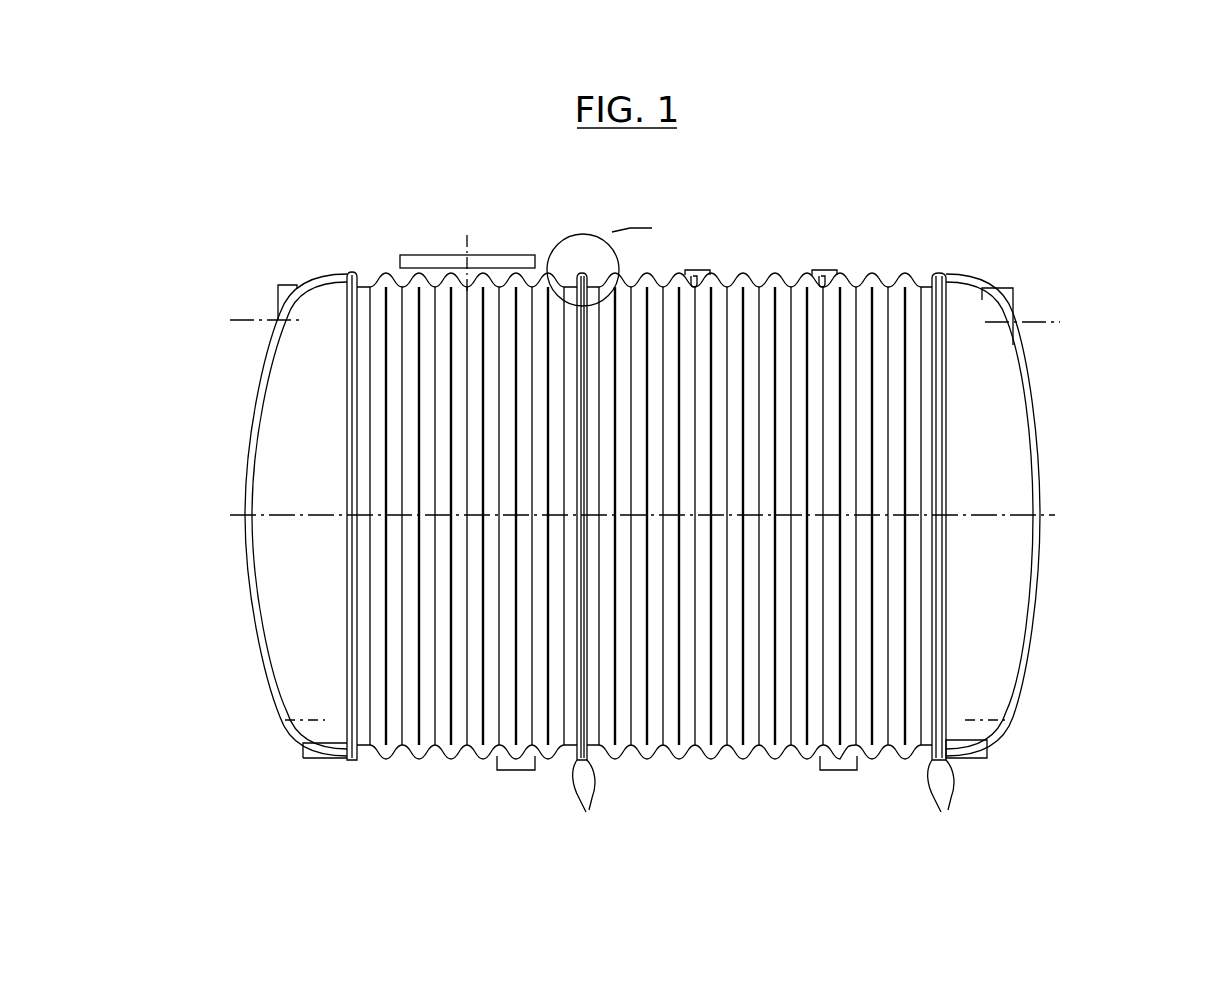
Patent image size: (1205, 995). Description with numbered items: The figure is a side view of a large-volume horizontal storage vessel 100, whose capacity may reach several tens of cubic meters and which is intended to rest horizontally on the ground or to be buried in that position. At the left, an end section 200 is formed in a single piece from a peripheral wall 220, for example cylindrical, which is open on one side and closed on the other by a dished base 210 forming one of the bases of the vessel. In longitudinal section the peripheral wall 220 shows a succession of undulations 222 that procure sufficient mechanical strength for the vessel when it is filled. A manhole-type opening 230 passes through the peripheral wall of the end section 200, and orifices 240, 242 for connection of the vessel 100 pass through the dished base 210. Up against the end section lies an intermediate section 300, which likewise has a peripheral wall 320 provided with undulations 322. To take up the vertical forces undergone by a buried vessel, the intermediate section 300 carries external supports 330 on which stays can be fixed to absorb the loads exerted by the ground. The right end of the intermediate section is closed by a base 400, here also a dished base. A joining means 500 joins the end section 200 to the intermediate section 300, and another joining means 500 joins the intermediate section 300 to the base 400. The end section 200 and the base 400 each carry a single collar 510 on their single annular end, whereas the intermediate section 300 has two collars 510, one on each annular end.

The vessel 100 is at (1005, 203).
The end section 200 is at (306, 575).
The dished base 210 is at (248, 612).
The peripheral wall 220 is at (384, 554).
The undulations 222 is at (535, 770).
The opening 230 is at (397, 262).
The orifice 240 is at (278, 292).
The orifice 242 is at (305, 755).
The intermediate section 300 is at (772, 780).
The peripheral wall 320 is at (660, 758).
The undulations 322 is at (857, 770).
The supports 330 is at (820, 272).
The base 400 is at (1018, 720).
The joining means 500 is at (574, 258).
The collar 510 is at (769, 806).